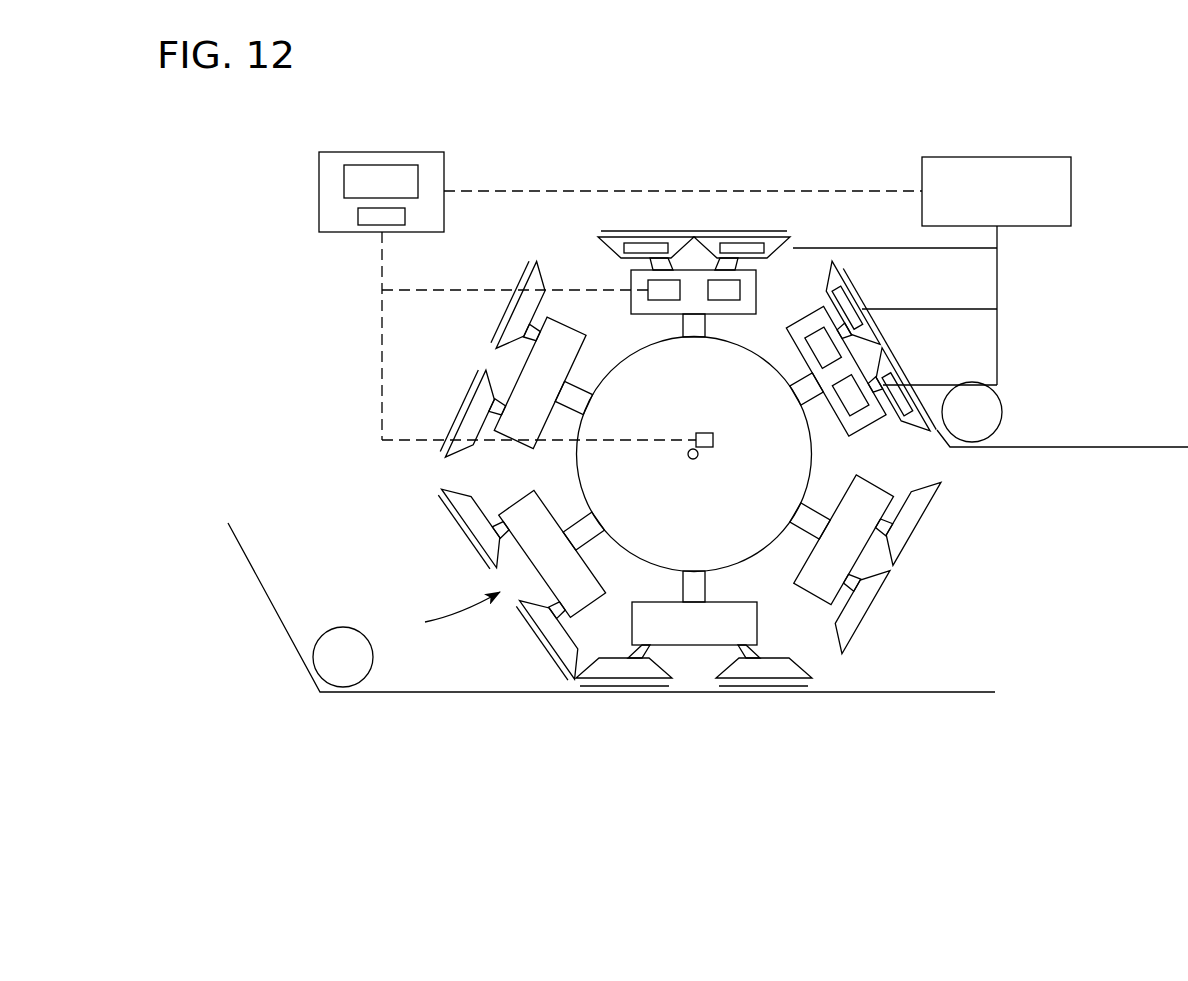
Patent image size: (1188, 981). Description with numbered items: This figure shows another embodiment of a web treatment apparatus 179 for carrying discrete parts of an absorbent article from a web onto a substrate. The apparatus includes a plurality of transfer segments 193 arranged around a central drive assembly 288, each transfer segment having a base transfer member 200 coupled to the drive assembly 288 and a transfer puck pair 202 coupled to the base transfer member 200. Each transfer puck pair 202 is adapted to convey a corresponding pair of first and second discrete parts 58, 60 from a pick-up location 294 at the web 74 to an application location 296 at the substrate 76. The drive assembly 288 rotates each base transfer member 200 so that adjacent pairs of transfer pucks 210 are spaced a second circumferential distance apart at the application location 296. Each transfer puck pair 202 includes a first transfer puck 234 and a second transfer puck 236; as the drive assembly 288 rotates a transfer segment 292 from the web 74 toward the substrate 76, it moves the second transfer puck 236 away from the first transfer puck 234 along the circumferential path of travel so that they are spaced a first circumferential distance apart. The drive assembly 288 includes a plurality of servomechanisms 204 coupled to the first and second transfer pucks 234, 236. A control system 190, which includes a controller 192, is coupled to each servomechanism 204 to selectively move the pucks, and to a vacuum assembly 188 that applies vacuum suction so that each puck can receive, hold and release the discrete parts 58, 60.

The first discrete part 58 is at (649, 231).
The second discrete part 60 is at (754, 231).
The web 74 is at (1043, 447).
The substrate 76 is at (930, 692).
The web treatment apparatus 179 is at (656, 486).
The vacuum assembly 188 is at (1030, 157).
The control system 190 is at (711, 264).
The controller 192 is at (404, 152).
The transfer segment 193 is at (441, 615).
The base transfer member 200 is at (528, 492).
The transfer puck pair 202 is at (913, 298).
The servomechanism 204 is at (743, 290).
The transfer puck 210 is at (552, 632).
The first transfer puck 234 is at (812, 676).
The second transfer puck 236 is at (598, 683).
The drive assembly 288 is at (748, 325).
The transfer segment 292 is at (948, 530).
The pick-up location 294 is at (935, 330).
The application location 296 is at (685, 708).